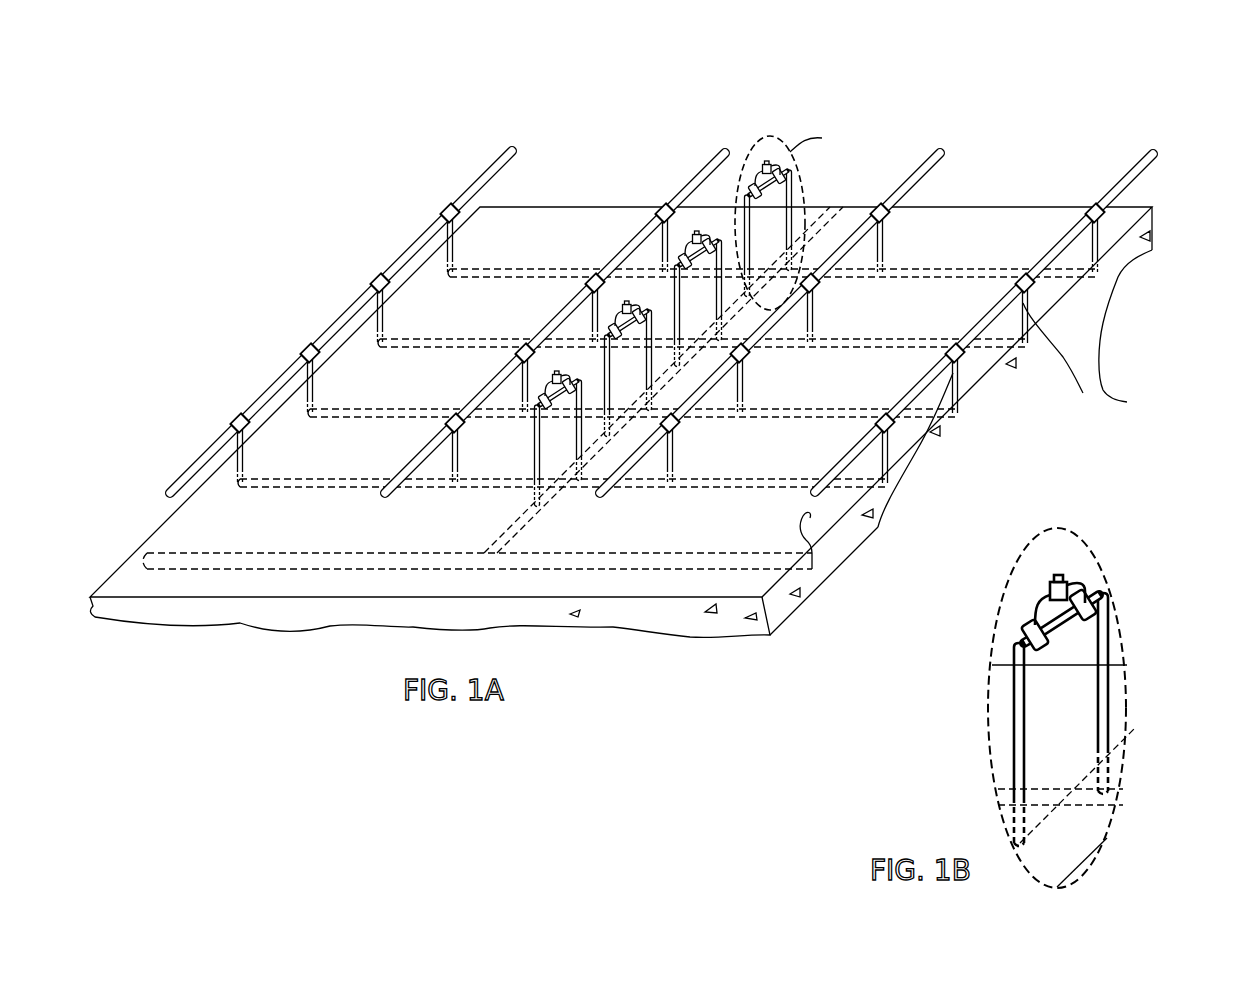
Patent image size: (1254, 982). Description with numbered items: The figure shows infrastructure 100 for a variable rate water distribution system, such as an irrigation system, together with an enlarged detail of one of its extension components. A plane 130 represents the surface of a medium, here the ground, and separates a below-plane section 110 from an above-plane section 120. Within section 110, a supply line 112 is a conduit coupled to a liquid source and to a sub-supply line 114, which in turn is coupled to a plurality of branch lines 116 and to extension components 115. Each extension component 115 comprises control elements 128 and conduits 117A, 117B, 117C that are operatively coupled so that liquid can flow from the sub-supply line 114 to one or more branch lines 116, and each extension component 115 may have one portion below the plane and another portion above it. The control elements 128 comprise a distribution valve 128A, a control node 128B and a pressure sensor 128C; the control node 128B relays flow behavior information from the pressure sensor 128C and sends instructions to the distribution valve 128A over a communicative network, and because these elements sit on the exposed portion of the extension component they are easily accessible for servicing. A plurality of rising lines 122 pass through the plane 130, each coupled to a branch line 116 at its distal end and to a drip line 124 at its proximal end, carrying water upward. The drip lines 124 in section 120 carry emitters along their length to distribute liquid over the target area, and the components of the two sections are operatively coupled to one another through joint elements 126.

In FIG. 1A, the infrastructure 100 is at (660, 374).
In FIG. 1A, the section 110 is at (1155, 208).
In FIG. 1A, the supply line 112 is at (808, 569).
In FIG. 1A, the sub-supply line 114 is at (523, 529).
In FIG. 1A, the extension component 115 is at (802, 223).
In FIG. 1A, the branch line 116 is at (568, 268).
In FIG. 1B, the conduit 117A is at (1017, 722).
In FIG. 1B, the conduit 117B is at (1062, 622).
In FIG. 1B, the conduit 117C is at (1103, 687).
In FIG. 1A, the section 120 is at (700, 300).
In FIG. 1A, the rising line 122 is at (887, 441).
In FIG. 1A, the drip line 124 is at (718, 160).
In FIG. 1A, the joint element 126 is at (240, 420).
In FIG. 1B, the control element 128 is at (1052, 568).
In FIG. 1B, the distribution valve 128A is at (1030, 628).
In FIG. 1B, the control node 128B is at (1057, 582).
In FIG. 1B, the pressure sensor 128C is at (1090, 600).
In FIG. 1A, the plane 130 is at (812, 518).